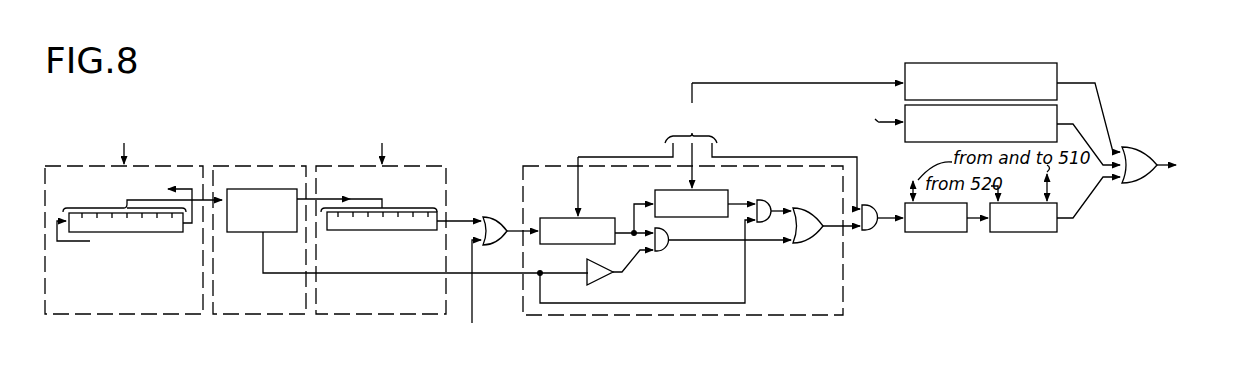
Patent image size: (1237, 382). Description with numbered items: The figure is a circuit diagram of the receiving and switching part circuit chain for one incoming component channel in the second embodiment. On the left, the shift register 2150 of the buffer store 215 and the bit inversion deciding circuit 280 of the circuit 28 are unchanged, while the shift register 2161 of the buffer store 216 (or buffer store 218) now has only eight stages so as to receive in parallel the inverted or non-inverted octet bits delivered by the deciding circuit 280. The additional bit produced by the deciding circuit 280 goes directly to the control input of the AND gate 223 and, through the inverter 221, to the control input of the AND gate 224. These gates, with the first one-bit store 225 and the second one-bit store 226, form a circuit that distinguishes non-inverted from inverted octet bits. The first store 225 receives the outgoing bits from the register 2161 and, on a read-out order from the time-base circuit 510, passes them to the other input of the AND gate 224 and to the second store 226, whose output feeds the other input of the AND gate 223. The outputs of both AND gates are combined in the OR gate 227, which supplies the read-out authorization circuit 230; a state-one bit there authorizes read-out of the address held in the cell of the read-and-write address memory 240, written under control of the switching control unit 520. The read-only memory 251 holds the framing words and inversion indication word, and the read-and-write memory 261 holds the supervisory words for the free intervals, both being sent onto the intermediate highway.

The buffer store 215 is at (153, 314).
The shift register 2150 is at (122, 232).
The bit inversion deciding circuit unit 28 is at (245, 314).
The bit inversion deciding circuit 280 is at (407, 231).
The buffer store 216 is at (375, 314).
The shift register 2161 is at (362, 230).
The buffer store 218 is at (488, 333).
The inverter 221 is at (603, 278).
The first one-bit store 225 is at (553, 218).
The second one-bit store 226 is at (655, 192).
The AND gate 224 is at (664, 251).
The AND gate 223 is at (765, 200).
The OR gate 227 is at (805, 243).
The read-out authorization circuit 230 is at (915, 232).
The read-and-write address memory 240 is at (1010, 232).
The read-only memory 251 is at (1057, 70).
The read-and-write memory 261 is at (1057, 112).
The time-base circuit 510 is at (719, 161).
The switching control unit 520 is at (834, 118).